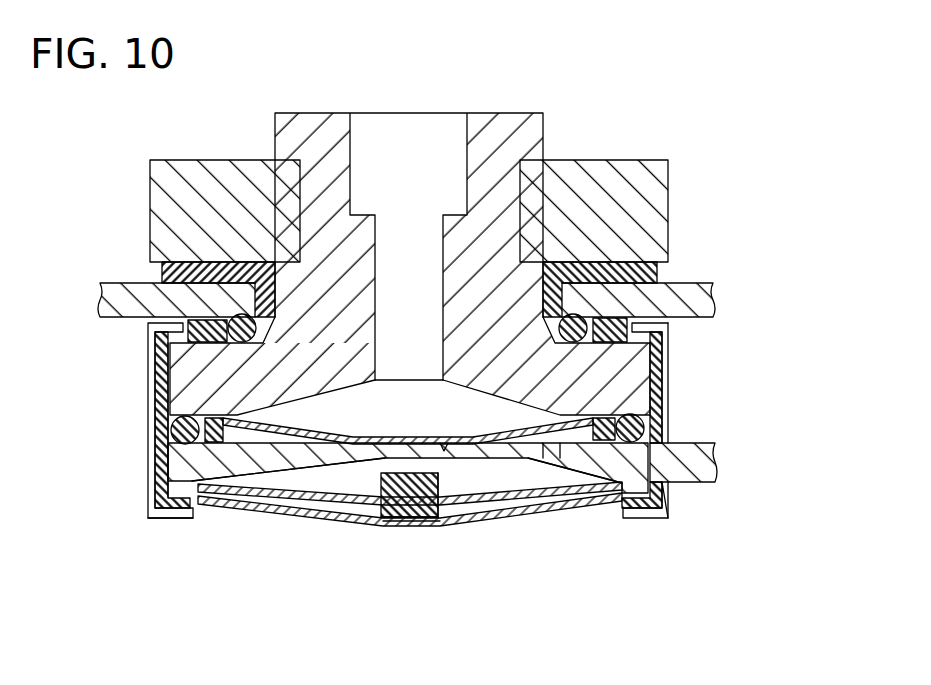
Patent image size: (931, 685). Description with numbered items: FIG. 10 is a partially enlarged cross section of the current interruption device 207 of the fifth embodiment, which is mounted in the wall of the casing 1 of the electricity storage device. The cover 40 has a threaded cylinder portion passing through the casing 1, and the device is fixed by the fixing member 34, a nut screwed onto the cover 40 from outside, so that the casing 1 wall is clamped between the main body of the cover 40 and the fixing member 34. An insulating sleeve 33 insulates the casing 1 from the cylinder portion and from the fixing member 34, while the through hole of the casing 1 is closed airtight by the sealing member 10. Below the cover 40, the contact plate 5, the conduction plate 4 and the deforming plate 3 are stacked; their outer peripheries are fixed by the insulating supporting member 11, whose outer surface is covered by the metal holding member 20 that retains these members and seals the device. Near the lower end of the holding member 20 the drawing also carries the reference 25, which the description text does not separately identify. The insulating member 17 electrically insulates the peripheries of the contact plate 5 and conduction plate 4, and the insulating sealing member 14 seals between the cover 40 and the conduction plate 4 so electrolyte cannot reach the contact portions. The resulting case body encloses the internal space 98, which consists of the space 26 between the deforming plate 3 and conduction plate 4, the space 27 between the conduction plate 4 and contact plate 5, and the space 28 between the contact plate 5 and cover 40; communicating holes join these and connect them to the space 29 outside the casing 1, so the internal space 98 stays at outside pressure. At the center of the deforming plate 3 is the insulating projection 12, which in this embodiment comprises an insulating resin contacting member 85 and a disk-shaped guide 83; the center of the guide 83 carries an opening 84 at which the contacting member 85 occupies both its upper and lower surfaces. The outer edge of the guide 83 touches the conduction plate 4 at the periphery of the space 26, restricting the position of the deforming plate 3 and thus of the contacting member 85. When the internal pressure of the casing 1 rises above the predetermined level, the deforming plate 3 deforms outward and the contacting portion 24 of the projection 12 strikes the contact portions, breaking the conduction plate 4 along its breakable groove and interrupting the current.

The casing 1 is at (712, 305).
The deforming plate 3 is at (239, 500).
The conduction plate 4 is at (318, 458).
The contact plate 5 is at (270, 445).
The sealing member 10 is at (612, 362).
The insulating supporting member 11 is at (660, 403).
The insulating projection 12 is at (445, 477).
The insulating sealing member 14 is at (665, 465).
The insulating member 17 is at (645, 430).
The holding member 20 is at (668, 372).
The contacting portion 24 is at (382, 473).
The housing foot 25 is at (124, 528).
The space 26 is at (238, 480).
The space 27 is at (240, 431).
The space 28 is at (392, 373).
The space outside the casing 29 is at (125, 148).
The insulating sleeve 33 is at (165, 271).
The fixing member 34 is at (565, 165).
The cover 40 is at (314, 128).
The guide 83 is at (492, 506).
The opening 84 is at (418, 526).
The contacting member 85 is at (395, 520).
The internal space 98 is at (55, 356).
The current interruption device 207 is at (702, 128).